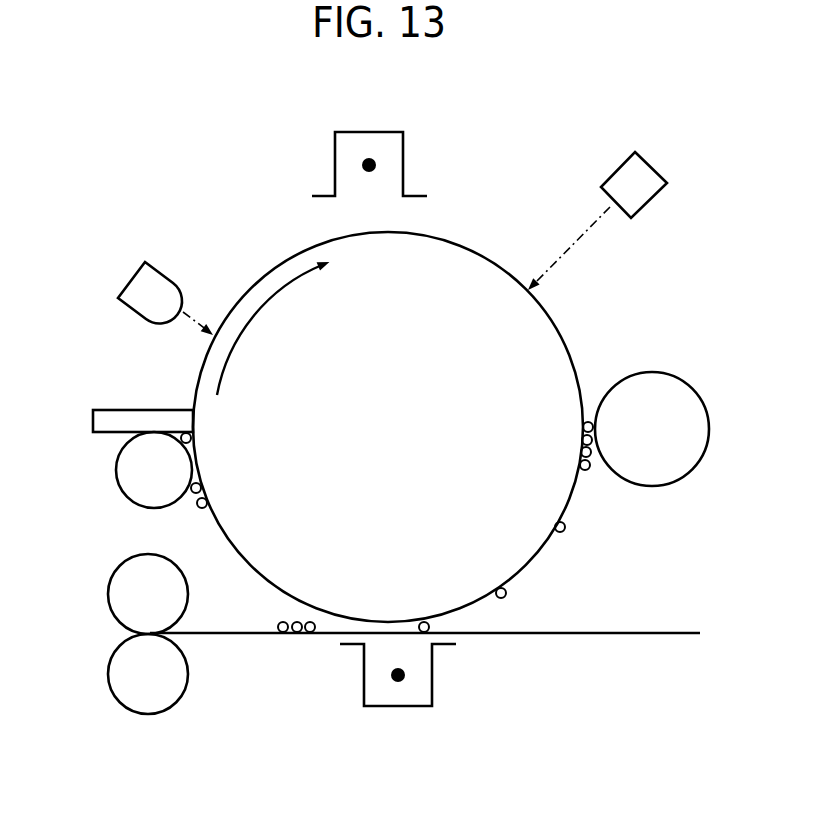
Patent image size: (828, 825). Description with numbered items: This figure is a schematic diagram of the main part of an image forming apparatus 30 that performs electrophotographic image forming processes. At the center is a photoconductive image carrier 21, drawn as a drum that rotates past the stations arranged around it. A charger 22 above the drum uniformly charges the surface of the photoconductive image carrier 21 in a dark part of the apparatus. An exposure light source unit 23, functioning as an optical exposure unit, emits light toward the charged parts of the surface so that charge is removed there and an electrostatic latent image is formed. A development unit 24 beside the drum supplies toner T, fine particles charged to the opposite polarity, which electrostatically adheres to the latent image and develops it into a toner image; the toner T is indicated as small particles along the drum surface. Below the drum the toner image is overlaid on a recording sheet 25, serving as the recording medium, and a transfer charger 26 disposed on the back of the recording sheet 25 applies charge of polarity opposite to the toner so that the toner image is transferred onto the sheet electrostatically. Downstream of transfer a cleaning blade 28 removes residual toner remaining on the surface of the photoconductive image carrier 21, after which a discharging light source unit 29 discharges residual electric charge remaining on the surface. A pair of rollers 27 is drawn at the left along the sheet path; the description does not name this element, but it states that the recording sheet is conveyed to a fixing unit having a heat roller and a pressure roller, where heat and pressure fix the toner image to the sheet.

The photoconductive image carrier 21 is at (462, 242).
The charger 22 is at (361, 132).
The exposure light source unit 23 is at (620, 165).
The development unit 24 is at (712, 368).
The recording sheet 25 is at (632, 633).
The transfer charger 26 is at (432, 678).
The fixing rollers 27 is at (78, 608).
The cleaning blade 28 is at (125, 410).
The discharging light source unit 29 is at (138, 273).
The image forming apparatus 30 is at (160, 182).
The toner T is at (589, 472).